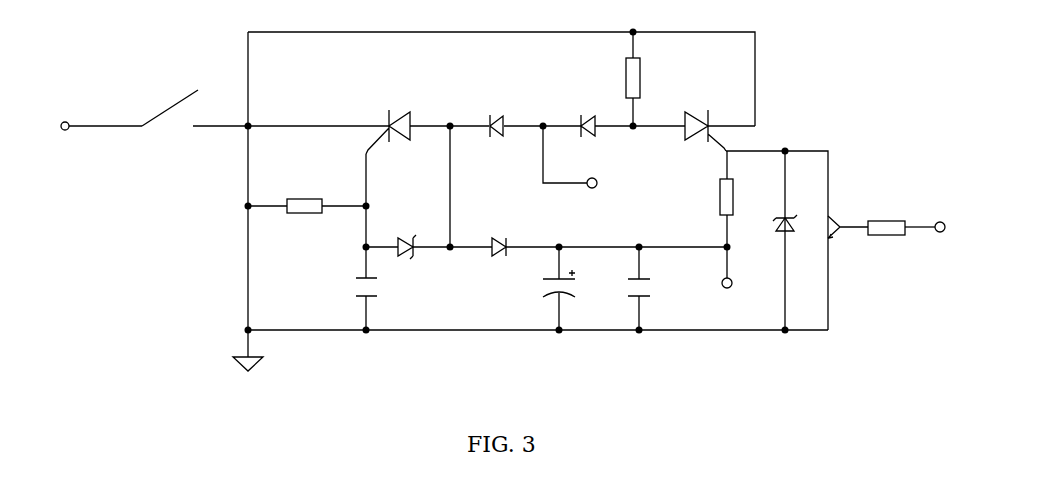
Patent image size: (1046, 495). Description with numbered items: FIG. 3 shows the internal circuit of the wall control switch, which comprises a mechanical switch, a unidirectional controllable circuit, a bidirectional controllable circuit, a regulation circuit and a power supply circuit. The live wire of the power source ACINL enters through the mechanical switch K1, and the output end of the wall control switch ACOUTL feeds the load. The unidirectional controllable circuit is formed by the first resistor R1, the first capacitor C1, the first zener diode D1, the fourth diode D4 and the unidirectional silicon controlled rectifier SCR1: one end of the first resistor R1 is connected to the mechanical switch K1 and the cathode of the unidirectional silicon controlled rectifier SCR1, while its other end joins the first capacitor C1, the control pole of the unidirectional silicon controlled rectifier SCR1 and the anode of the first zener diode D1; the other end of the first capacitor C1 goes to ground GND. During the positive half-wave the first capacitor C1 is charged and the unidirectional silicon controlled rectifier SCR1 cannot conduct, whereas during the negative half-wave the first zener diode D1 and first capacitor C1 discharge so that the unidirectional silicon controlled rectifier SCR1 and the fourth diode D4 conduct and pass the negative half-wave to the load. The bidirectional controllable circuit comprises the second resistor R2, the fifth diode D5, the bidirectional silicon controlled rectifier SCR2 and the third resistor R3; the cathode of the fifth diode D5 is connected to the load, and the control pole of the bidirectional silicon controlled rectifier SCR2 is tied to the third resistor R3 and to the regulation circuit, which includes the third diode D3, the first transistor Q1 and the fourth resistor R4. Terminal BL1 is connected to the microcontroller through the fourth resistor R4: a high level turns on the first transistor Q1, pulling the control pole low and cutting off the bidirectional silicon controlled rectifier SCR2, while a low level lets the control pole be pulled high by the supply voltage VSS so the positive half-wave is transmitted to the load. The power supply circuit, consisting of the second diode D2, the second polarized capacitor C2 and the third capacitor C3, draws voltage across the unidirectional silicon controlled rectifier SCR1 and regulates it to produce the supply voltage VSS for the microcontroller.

The mechanical switch K1 is at (170, 102).
The unidirectional silicon controlled rectifier SCR1 is at (388, 122).
The bidirectional silicon controlled rectifier SCR2 is at (704, 121).
The first zener diode D1 is at (407, 239).
The second diode D2 is at (499, 237).
The third diode D3 is at (789, 219).
The fourth diode D4 is at (496, 116).
The fifth diode D5 is at (586, 116).
The first resistor R1 is at (307, 198).
The second resistor R2 is at (620, 79).
The third resistor R3 is at (735, 197).
The fourth resistor R4 is at (901, 219).
The first capacitor C1 is at (356, 287).
The second polarized capacitor C2 is at (569, 283).
The third capacitor C3 is at (649, 287).
The first transistor Q1 is at (848, 221).
The microcontroller control input BL1 is at (940, 218).
The supply voltage VSS is at (724, 292).
The ground GND is at (248, 359).
The AC IN L live wire ACINL is at (93, 113).
The AC OUT L output end ACOUTL is at (616, 184).